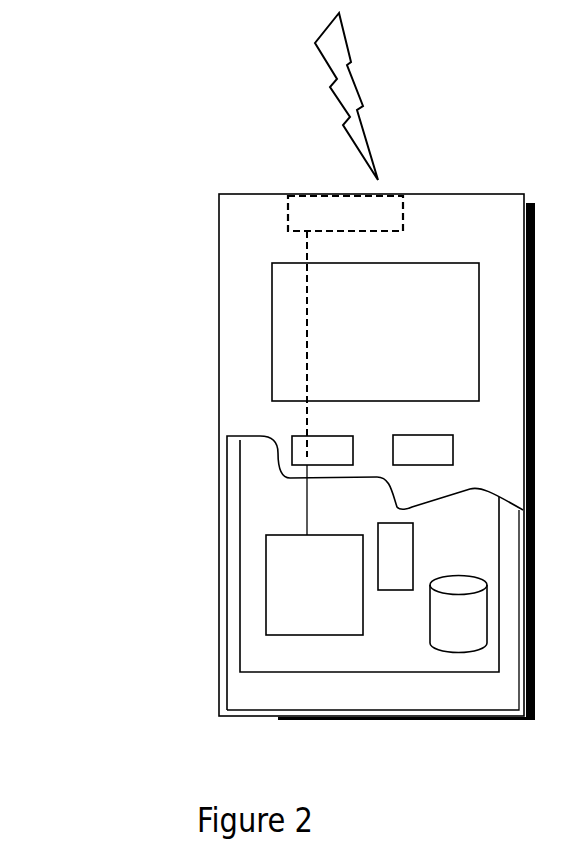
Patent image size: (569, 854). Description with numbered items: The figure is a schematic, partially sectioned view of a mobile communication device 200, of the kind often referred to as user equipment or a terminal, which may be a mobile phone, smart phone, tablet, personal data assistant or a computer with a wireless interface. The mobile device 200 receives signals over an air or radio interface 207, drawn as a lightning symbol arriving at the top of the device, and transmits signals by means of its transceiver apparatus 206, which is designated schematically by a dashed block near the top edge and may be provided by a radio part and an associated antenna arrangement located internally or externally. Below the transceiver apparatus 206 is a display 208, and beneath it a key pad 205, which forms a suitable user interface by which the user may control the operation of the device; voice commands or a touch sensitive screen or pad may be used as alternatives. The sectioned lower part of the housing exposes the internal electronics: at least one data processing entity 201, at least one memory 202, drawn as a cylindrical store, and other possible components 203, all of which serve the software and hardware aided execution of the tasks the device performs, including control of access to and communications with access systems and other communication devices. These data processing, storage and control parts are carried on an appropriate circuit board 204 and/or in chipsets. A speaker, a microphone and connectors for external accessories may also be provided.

The communication device 200 is at (219, 238).
The data processing entity 201 is at (273, 568).
The memory 202 is at (452, 628).
The other possible components 203 is at (395, 540).
The circuit board 204 is at (265, 653).
The key pad 205 is at (297, 452).
The transceiver apparatus 206 is at (392, 207).
The air or radio interface 207 is at (380, 120).
The display 208 is at (289, 318).